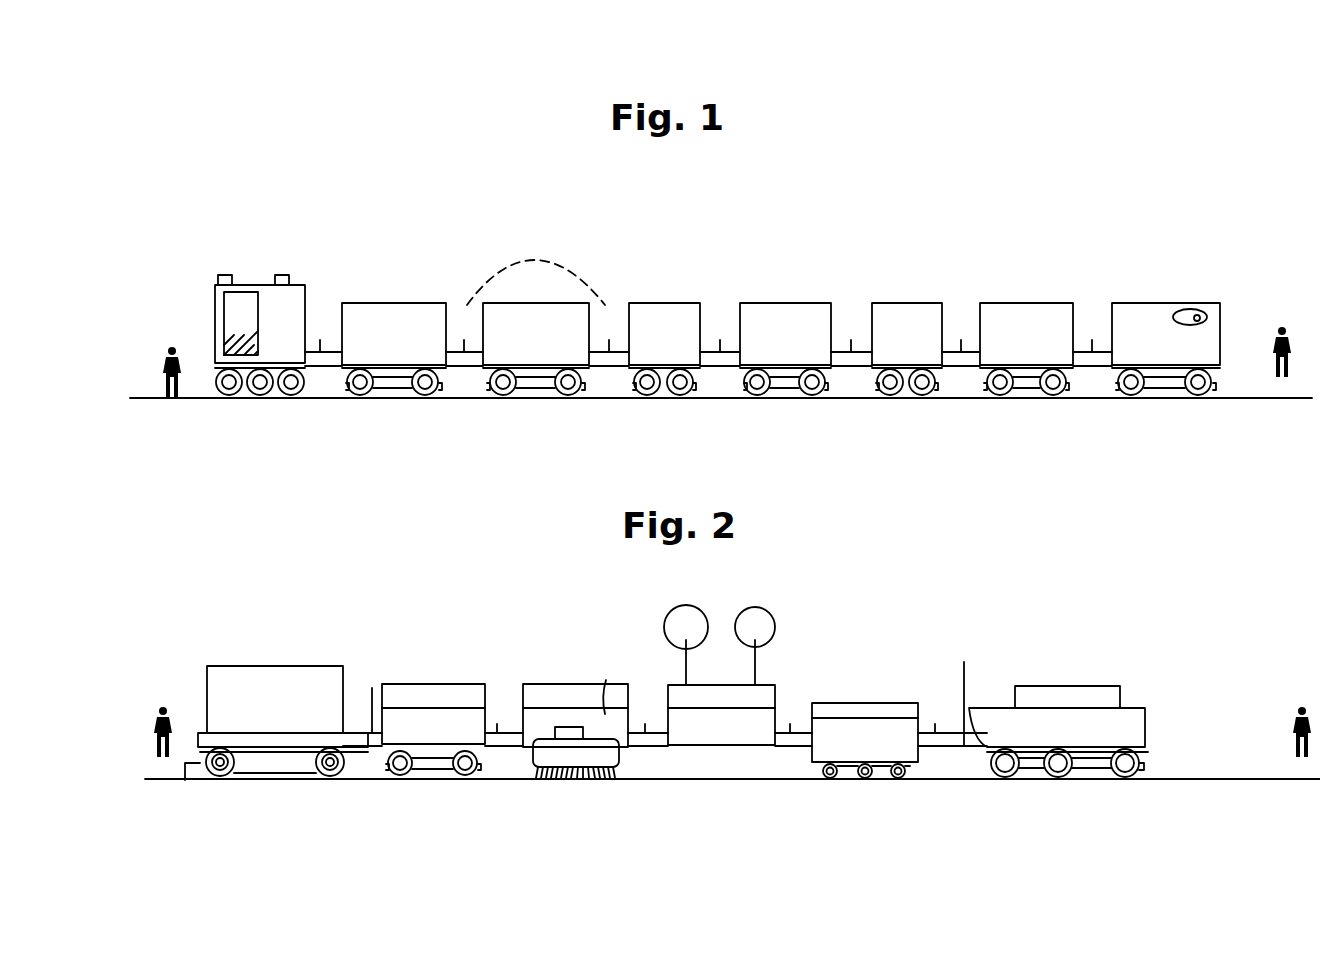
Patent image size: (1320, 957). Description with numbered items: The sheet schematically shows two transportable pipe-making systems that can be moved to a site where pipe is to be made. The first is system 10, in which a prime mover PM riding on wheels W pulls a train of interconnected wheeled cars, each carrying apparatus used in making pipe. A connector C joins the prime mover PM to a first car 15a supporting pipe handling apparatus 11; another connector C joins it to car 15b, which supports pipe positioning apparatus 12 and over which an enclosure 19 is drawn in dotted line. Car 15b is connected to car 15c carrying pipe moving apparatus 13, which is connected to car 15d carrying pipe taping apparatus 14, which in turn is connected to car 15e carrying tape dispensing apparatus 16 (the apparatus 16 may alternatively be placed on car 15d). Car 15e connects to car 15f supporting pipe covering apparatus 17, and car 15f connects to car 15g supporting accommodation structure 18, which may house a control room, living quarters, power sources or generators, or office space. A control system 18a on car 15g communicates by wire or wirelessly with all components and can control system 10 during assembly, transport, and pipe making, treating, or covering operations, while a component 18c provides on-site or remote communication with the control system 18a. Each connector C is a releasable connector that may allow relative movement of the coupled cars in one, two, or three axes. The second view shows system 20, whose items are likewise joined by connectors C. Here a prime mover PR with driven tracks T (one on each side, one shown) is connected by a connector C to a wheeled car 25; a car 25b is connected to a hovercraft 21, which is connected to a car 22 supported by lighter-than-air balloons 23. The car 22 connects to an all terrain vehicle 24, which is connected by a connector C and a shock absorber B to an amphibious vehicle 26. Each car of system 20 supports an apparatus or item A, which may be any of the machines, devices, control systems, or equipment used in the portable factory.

In FIG. 1, the system 10 is at (432, 285).
In FIG. 1, the pipe handling apparatus 11 is at (394, 349).
In FIG. 1, the pipe positioning apparatus 12 is at (558, 336).
In FIG. 1, the pipe moving apparatus 13 is at (688, 338).
In FIG. 1, the pipe taping apparatus 14 is at (785, 349).
In FIG. 1, the first car 15a is at (357, 313).
In FIG. 1, the car 15b is at (517, 339).
In FIG. 1, the car 15c is at (664, 328).
In FIG. 1, the car 15d is at (785, 329).
In FIG. 1, the car 15e is at (898, 329).
In FIG. 1, the car 15f is at (1026, 329).
In FIG. 1, the car 15g is at (1179, 357).
In FIG. 1, the tape dispensing apparatus 16 is at (918, 342).
In FIG. 1, the pipe covering apparatus 17 is at (1048, 344).
In FIG. 1, the accommodation structure 18 is at (1180, 331).
In FIG. 1, the control system 18a is at (1181, 309).
In FIG. 1, the component 18c is at (1197, 314).
In FIG. 1, the enclosure 19 is at (536, 269).
In FIG. 1, the prime mover PM is at (249, 358).
In FIG. 1, the wheels W is at (290, 395).
In FIG. 1, the connector C is at (708, 339).
In FIG. 2, the connector C is at (665, 708).
In FIG. 2, the system 20 is at (473, 664).
In FIG. 2, the hovercraft 21 is at (558, 722).
In FIG. 2, the car 22 is at (738, 739).
In FIG. 2, the lighter-than-air balloons 23 is at (666, 605).
In FIG. 2, the all terrain vehicle 24 is at (882, 755).
In FIG. 2, the wheeled car 25 is at (442, 739).
In FIG. 2, the car 25b is at (625, 680).
In FIG. 2, the amphibious vehicle 26 is at (1085, 739).
In FIG. 2, the apparatus or item A is at (810, 701).
In FIG. 2, the shock absorber B is at (964, 662).
In FIG. 2, the prime mover PR is at (298, 708).
In FIG. 2, the driven tracks T is at (189, 791).